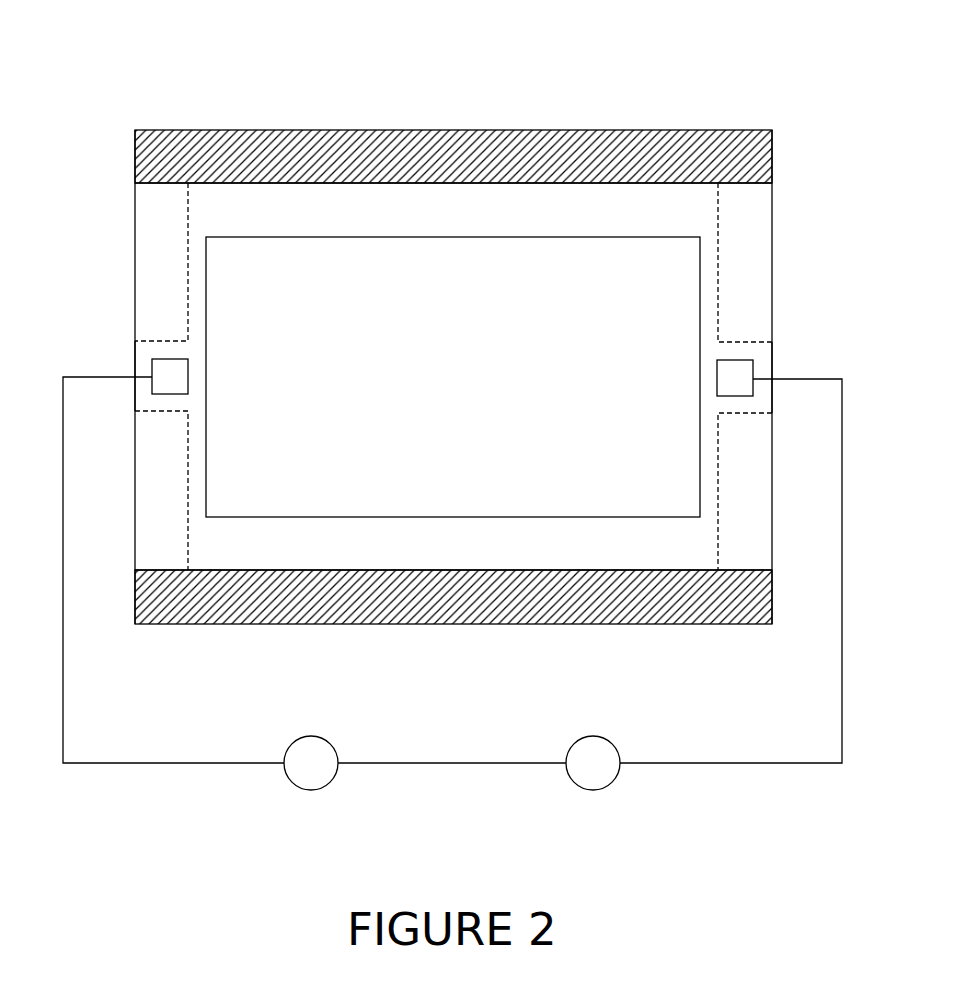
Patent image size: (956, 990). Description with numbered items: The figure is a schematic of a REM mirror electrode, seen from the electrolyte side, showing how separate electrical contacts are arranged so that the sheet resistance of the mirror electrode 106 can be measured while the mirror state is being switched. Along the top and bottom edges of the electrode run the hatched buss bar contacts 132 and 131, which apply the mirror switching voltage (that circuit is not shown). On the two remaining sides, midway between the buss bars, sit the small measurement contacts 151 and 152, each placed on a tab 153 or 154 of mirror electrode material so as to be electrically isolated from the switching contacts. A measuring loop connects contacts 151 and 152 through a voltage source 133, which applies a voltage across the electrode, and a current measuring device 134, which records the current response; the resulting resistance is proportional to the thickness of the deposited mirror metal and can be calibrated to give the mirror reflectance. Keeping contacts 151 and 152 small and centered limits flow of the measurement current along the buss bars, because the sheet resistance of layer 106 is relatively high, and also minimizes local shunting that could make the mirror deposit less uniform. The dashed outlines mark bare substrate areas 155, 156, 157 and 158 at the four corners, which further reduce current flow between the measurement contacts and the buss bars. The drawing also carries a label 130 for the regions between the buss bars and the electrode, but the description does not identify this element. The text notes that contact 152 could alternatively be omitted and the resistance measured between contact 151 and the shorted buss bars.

The mirror electrode 106 is at (372, 272).
The gap 130 is at (593, 208).
The contact 131 is at (750, 615).
The contact 132 is at (720, 140).
The voltage source 133 is at (285, 770).
The current measuring device 134 is at (607, 787).
The electrical contact 151 is at (167, 381).
The electrical contact 152 is at (745, 386).
The tab 153 is at (143, 353).
The tab 154 is at (762, 352).
The bare substrate area 155 is at (160, 243).
The bare substrate area 156 is at (758, 242).
The bare substrate area 157 is at (162, 551).
The bare substrate area 158 is at (753, 505).